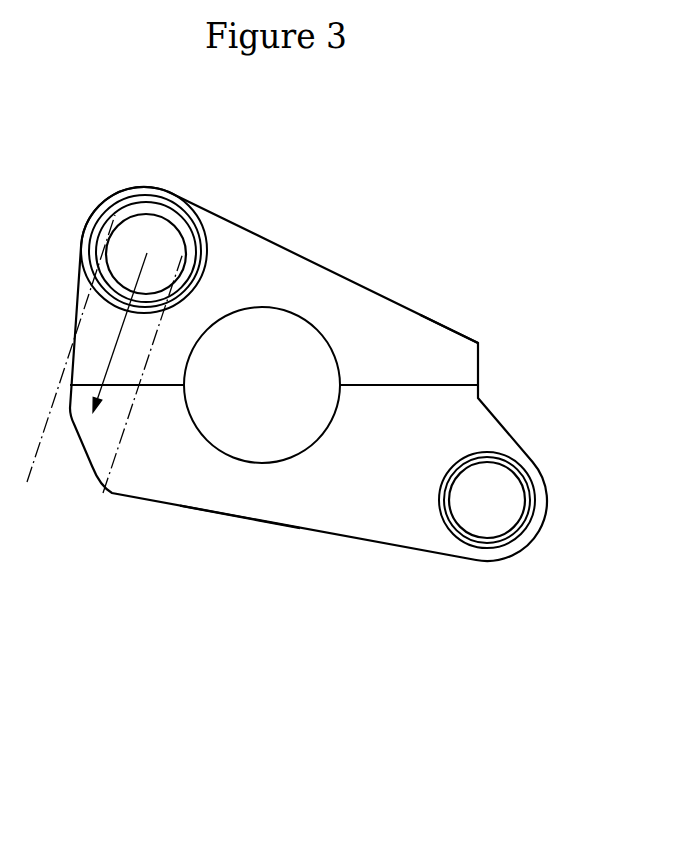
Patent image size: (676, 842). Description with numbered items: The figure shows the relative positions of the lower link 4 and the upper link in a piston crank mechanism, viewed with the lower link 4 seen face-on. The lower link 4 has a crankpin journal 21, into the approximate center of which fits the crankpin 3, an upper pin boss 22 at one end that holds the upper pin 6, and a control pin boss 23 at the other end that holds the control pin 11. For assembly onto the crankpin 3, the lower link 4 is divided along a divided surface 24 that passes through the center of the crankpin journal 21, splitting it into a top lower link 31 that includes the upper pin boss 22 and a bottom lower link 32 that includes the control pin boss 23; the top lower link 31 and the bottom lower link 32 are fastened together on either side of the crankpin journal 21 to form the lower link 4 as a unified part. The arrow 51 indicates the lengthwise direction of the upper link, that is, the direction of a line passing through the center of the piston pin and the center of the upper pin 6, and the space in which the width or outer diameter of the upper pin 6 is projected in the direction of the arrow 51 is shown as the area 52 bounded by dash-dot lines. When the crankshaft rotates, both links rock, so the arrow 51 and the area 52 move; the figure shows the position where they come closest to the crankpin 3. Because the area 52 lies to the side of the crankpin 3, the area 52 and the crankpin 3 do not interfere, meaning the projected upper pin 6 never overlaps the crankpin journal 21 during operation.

The crankpin 3 is at (298, 360).
The lower link 4 is at (282, 214).
The upper pin 6 is at (135, 228).
The control pin 11 is at (505, 508).
The crankpin journal 21 is at (288, 328).
The upper pin boss 22 is at (152, 188).
The control pin boss 23 is at (548, 493).
The divided surface 24 is at (450, 385).
The top lower link 31 is at (453, 347).
The bottom lower link 32 is at (240, 498).
The arrow 51 is at (120, 330).
The area 52 is at (27, 482).